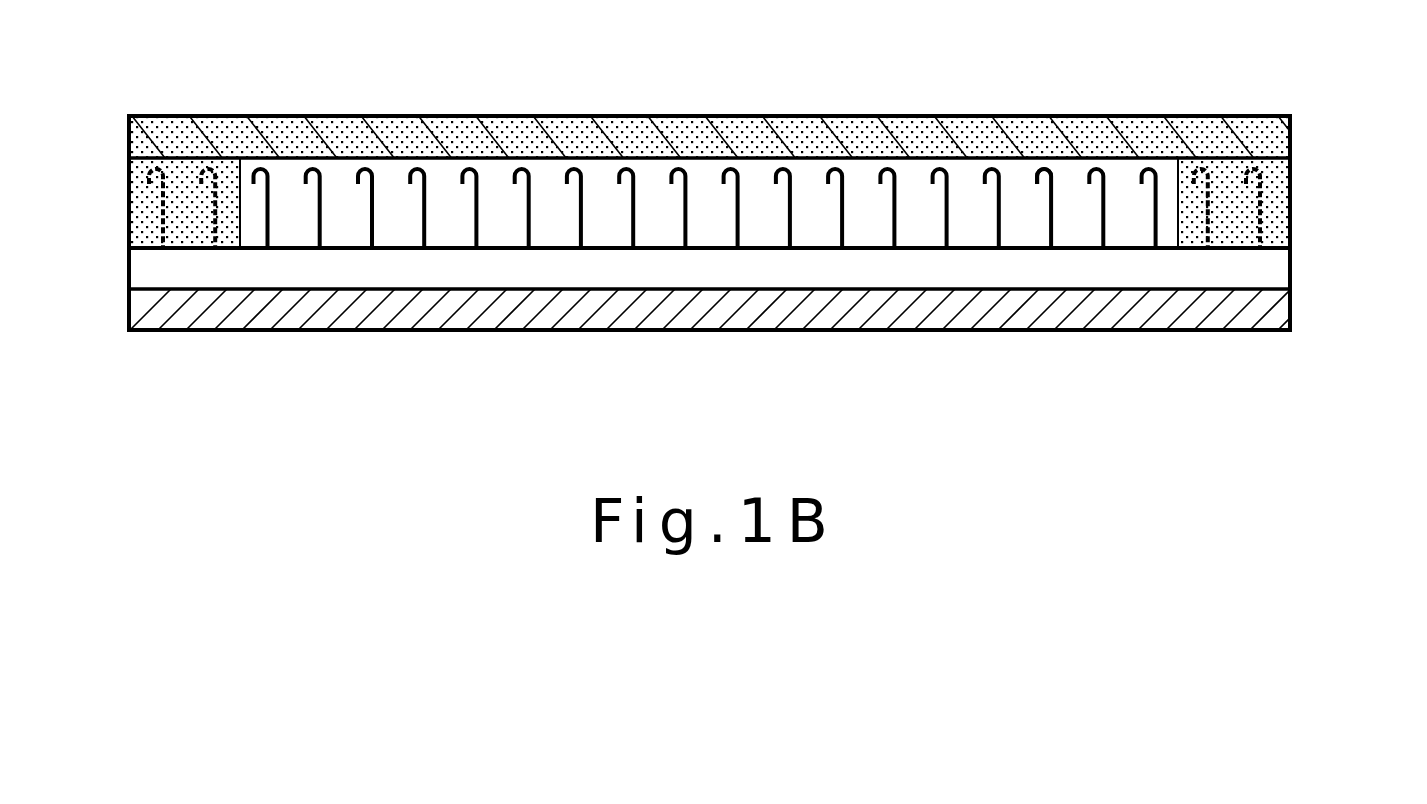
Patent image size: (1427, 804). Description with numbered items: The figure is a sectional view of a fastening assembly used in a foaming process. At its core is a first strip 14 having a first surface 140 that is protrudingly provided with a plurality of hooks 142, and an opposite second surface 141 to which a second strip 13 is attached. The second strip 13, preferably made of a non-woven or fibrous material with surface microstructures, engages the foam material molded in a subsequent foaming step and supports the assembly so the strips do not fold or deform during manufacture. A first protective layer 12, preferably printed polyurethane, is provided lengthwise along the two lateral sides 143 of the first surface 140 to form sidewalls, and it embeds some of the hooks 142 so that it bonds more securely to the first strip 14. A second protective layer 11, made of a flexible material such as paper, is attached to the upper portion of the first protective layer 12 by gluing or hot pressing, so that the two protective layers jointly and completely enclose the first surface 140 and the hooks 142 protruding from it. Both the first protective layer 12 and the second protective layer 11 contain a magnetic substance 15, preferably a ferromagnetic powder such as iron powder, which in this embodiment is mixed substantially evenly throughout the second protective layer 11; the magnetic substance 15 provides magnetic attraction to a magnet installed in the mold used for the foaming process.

The second protective layer 11 is at (1278, 127).
The first protective layer 12 is at (1278, 230).
The second strip 13 is at (1278, 313).
The first strip 14 is at (1278, 275).
The magnetic substance 15 is at (362, 133).
The first surface 140 is at (550, 248).
The second surface 141 is at (615, 290).
The hooks 142 is at (1003, 203).
The lateral sides 143 is at (185, 247).